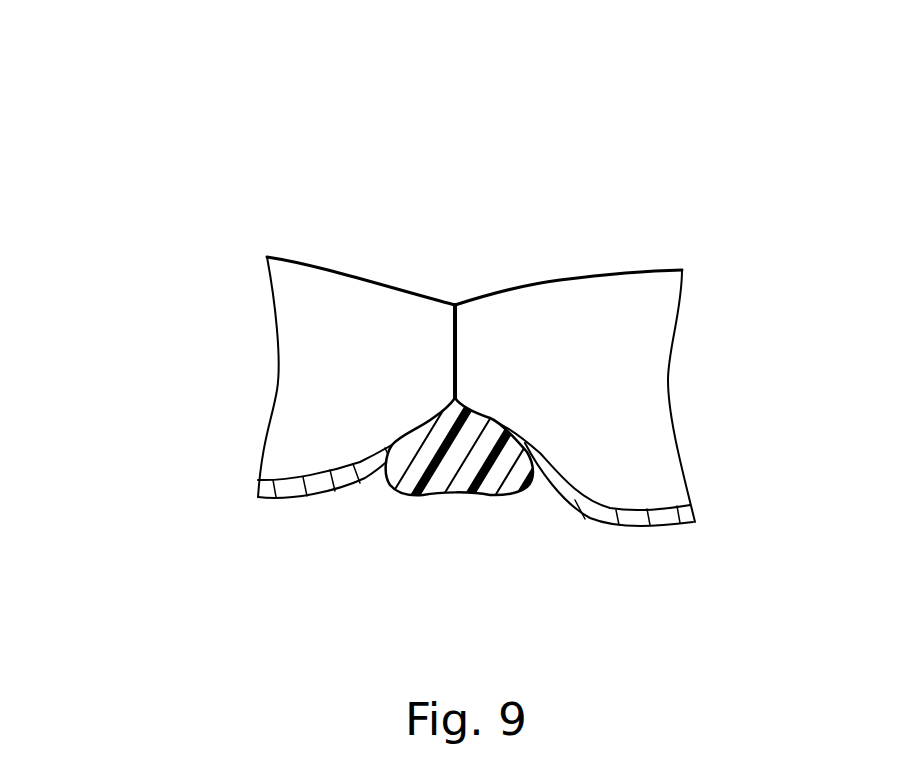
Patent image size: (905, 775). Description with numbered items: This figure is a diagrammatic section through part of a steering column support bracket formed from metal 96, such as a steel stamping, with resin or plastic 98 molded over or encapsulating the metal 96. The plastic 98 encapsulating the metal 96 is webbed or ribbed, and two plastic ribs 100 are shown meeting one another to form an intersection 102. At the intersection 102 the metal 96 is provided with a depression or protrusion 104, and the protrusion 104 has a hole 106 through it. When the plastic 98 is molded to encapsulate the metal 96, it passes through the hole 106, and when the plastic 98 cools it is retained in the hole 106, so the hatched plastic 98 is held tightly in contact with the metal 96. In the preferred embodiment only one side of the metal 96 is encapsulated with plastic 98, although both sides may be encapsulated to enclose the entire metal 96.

The metal 96 is at (625, 528).
The plastic 98 is at (537, 283).
The plastic ribs 100 is at (340, 267).
The intersection 102 is at (455, 307).
The protrusion 104 is at (387, 440).
The hole 106 is at (512, 412).